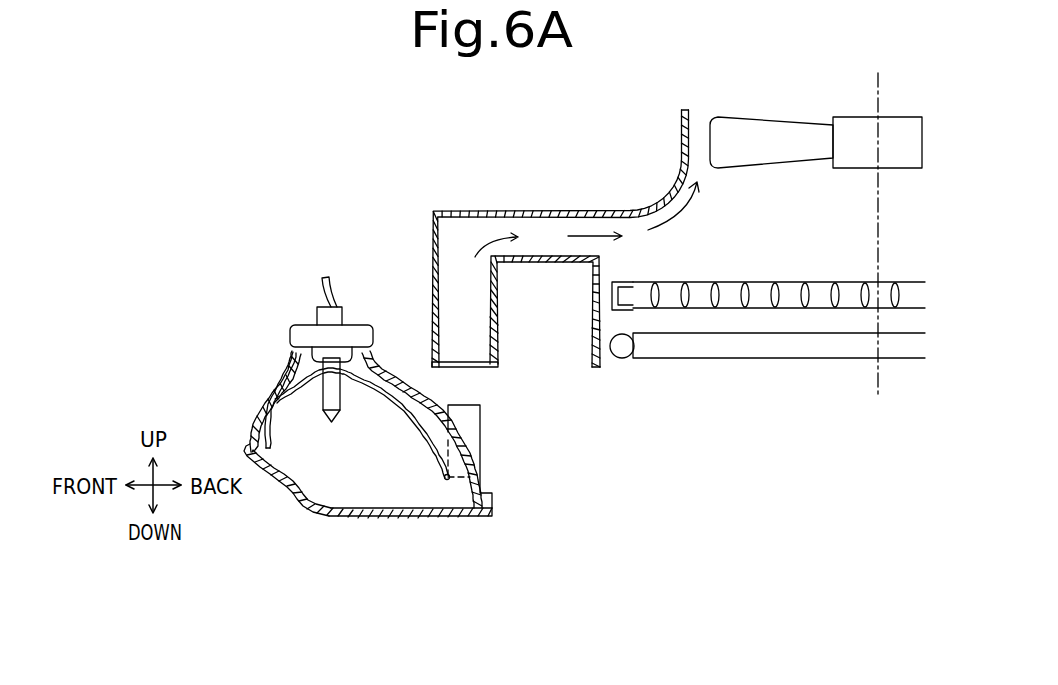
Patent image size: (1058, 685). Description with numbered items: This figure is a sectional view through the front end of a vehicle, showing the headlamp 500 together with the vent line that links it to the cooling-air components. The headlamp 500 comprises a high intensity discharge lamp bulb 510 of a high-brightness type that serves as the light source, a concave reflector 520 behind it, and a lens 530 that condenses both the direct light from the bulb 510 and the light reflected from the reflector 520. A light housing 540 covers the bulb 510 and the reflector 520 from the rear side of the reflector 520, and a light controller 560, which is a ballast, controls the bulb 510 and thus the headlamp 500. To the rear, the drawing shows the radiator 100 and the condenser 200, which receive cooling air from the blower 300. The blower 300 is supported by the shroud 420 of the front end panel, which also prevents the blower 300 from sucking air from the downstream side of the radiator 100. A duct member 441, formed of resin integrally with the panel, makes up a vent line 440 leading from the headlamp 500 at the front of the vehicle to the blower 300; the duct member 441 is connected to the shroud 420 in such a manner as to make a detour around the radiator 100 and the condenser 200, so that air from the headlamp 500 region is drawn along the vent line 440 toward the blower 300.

The radiator 100 is at (795, 280).
The condenser 200 is at (807, 358).
The blower 300 is at (786, 137).
The shroud 420 is at (663, 188).
The vent line 440 is at (565, 238).
The duct member 441 is at (505, 206).
The headlamp 500 is at (293, 306).
The high intensity discharge lamp bulb 510 is at (273, 393).
The concave reflector 520 is at (400, 378).
The lens 530 is at (388, 518).
The light housing 540 is at (280, 383).
The light controller 560 is at (480, 442).